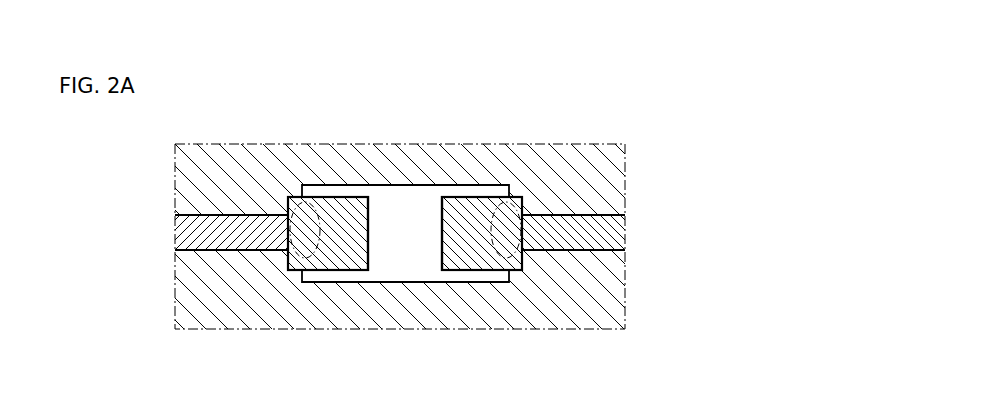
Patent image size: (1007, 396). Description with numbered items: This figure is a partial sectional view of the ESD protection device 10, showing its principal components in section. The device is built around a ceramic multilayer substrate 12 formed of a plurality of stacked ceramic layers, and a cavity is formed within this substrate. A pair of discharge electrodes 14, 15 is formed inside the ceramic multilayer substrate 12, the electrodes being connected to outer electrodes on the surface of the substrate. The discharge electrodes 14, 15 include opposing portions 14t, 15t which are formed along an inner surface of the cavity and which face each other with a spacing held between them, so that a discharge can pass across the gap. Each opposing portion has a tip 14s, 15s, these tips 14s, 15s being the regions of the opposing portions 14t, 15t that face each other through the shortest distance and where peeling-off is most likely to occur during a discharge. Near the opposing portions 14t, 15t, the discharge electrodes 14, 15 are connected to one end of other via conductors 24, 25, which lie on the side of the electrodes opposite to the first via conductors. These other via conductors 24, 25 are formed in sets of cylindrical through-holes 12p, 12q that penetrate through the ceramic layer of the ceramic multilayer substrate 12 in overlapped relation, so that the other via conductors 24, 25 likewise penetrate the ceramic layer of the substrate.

The ESD protection device 10 is at (415, 194).
The ceramic multilayer substrate 12 is at (428, 202).
The cylindrical through-hole 12p is at (320, 207).
The cylindrical through-hole 12q is at (493, 212).
The discharge electrode 14 is at (261, 239).
The tip 14s is at (368, 208).
The opposing portion 14t is at (368, 240).
The discharge electrode 15 is at (550, 237).
The tip 15s is at (443, 210).
The opposing portion 15t is at (442, 240).
The other via conductor 24 is at (293, 199).
The other via conductor 25 is at (517, 205).